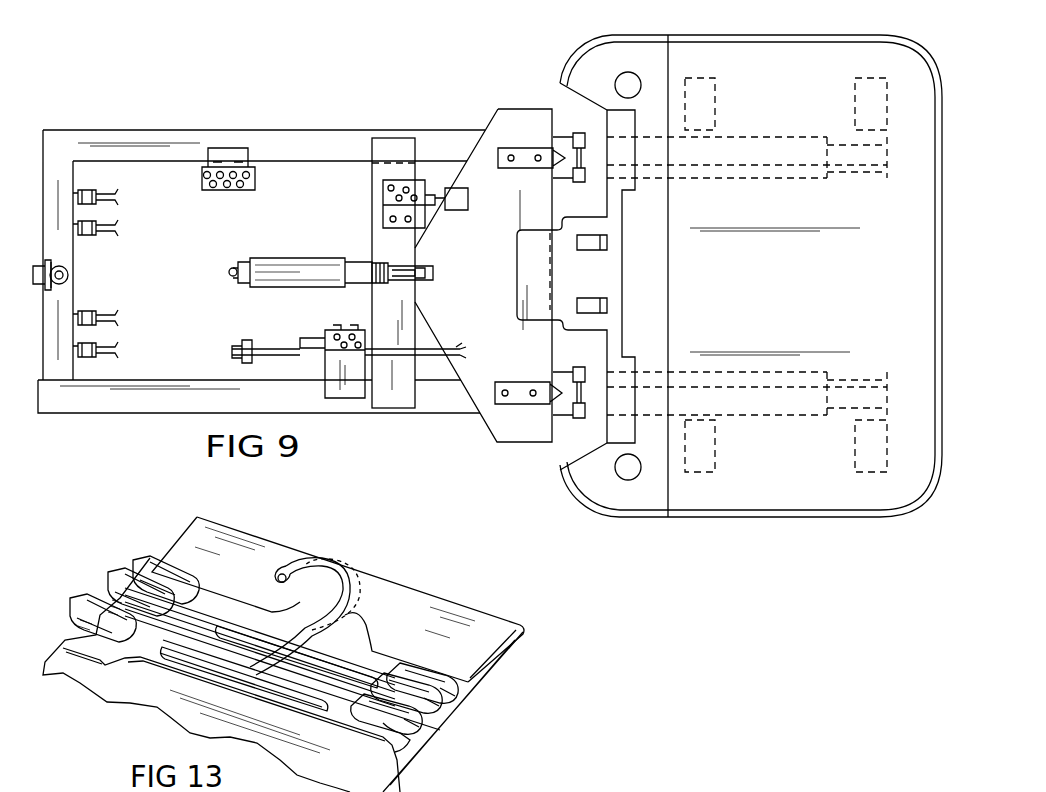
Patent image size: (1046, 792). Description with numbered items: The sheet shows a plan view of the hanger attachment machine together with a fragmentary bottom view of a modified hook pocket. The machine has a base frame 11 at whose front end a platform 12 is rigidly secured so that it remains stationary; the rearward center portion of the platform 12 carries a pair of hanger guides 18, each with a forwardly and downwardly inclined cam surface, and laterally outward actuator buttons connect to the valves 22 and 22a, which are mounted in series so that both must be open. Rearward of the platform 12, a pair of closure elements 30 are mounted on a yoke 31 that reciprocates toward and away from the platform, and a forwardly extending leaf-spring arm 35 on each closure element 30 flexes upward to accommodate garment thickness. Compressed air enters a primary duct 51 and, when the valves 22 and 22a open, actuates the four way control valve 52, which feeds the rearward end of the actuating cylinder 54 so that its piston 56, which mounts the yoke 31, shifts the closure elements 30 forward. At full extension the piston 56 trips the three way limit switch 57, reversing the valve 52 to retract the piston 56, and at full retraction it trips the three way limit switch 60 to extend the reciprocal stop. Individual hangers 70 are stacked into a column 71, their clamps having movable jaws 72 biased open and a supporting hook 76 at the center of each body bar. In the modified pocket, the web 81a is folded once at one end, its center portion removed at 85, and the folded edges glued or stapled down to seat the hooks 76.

In FIG. 9, the base frame 11 is at (165, 125).
In FIG. 9, the platform 12 is at (780, 36).
In FIG. 9, the hanger guides 18 is at (606, 305).
In FIG. 9, the valve 22 is at (630, 72).
In FIG. 9, the valve 22a is at (628, 481).
In FIG. 9, the closure elements 30 is at (518, 170).
In FIG. 9, the yoke 31 is at (481, 122).
In FIG. 9, the forwardly extending arm 35 is at (522, 150).
In FIG. 9, the primary duct 51 is at (74, 280).
In FIG. 9, the four way control valve 52 is at (254, 188).
In FIG. 9, the actuating cylinder 54 is at (312, 257).
In FIG. 9, the piston 56 is at (415, 285).
In FIG. 9, the three way limit switch 57 is at (330, 326).
In FIG. 9, the three way limit switch 60 is at (383, 189).
In FIG. 13, the hangers 70 is at (160, 666).
In FIG. 13, the column 71 is at (468, 697).
In FIG. 13, the movable jaws 72 is at (147, 555).
In FIG. 13, the supporting hook 76 is at (340, 572).
In FIG. 13, the web 81a is at (398, 785).
In FIG. 13, the removed center portion 85 is at (358, 626).